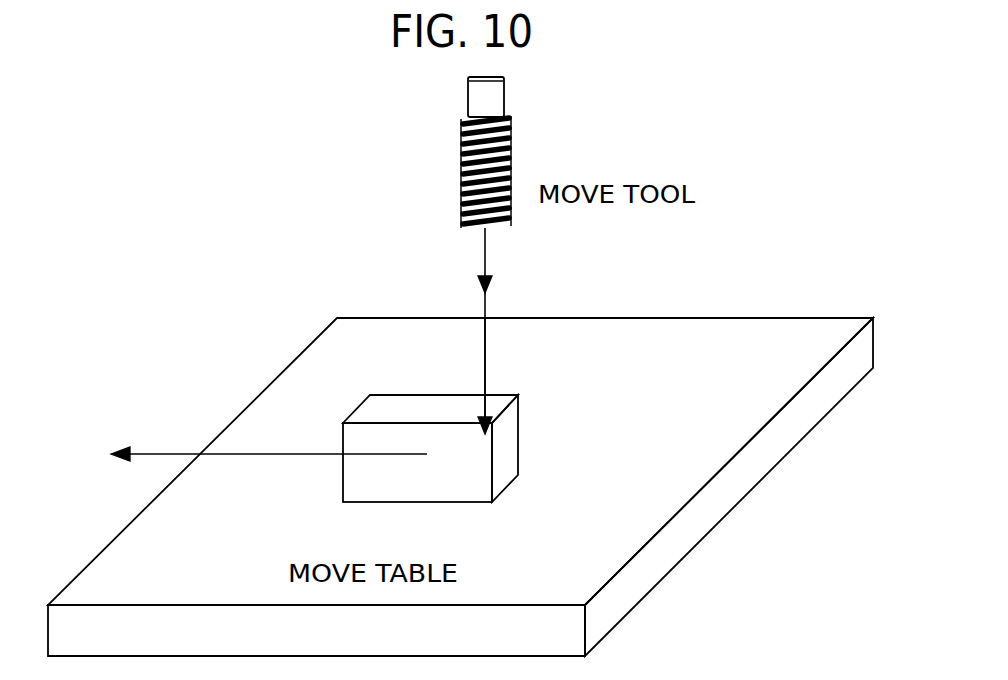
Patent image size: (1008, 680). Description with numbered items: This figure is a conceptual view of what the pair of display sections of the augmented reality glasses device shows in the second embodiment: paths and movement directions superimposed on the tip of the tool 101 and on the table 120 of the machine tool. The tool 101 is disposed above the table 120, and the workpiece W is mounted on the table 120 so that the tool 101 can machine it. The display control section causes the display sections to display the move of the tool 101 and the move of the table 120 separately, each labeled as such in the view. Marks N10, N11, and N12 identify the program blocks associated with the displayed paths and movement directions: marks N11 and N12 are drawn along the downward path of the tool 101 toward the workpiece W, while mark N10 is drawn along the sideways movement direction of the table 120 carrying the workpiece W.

The tool 101 is at (504, 96).
The table 120 is at (790, 337).
The workpiece W is at (388, 409).
The mark N10 is at (269, 442).
The mark N11 is at (513, 330).
The mark N12 is at (513, 376).